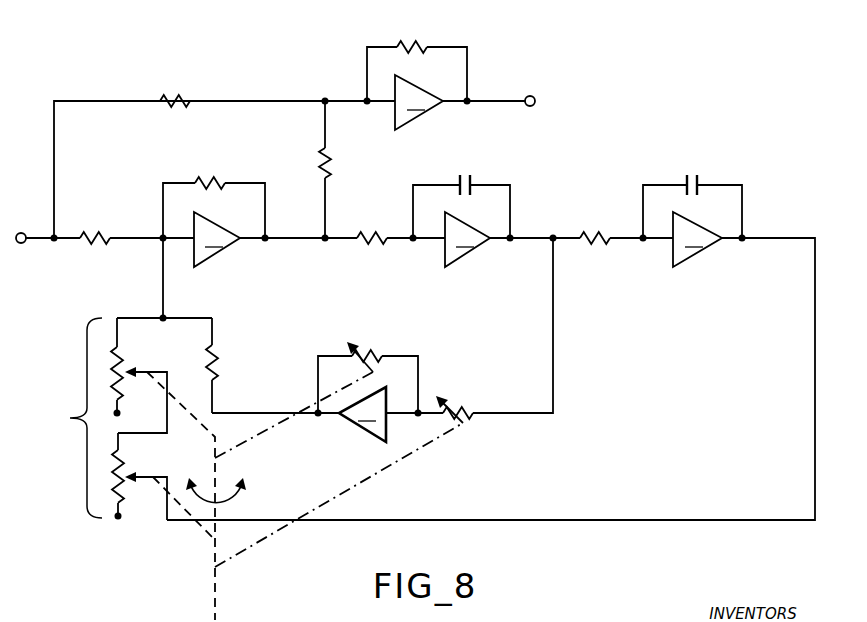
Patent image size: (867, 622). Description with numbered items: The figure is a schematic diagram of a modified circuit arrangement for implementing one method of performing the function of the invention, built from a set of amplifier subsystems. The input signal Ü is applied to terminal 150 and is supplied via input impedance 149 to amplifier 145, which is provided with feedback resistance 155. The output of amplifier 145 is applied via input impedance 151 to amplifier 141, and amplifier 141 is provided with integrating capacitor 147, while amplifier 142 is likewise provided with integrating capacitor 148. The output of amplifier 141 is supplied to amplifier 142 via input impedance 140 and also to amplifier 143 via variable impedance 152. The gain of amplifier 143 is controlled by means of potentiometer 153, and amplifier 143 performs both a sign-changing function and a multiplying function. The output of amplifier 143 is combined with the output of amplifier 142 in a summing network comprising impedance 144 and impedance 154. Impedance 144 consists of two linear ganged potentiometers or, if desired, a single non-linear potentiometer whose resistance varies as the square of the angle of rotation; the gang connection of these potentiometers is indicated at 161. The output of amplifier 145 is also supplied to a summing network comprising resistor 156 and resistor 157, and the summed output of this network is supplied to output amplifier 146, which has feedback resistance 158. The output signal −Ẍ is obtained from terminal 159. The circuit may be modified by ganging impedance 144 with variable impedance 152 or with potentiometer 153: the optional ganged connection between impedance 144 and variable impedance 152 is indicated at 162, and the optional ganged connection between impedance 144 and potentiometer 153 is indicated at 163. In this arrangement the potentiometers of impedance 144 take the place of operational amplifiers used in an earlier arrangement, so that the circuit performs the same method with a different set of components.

The input impedance 140 is at (595, 248).
The amplifier 141 is at (467, 239).
The amplifier 142 is at (697, 239).
The amplifier 143 is at (362, 414).
The impedance 144 is at (70, 420).
The amplifier 145 is at (217, 239).
The output amplifier 146 is at (419, 102).
The integrating capacitor 147 is at (476, 180).
The integrating capacitor 148 is at (700, 179).
The input impedance 149 is at (93, 232).
The terminal 150 is at (24, 245).
The input impedance 151 is at (369, 248).
The variable impedance 152 is at (464, 407).
The potentiometer 153 is at (375, 354).
The impedance 154 is at (218, 352).
The feedback resistance 155 is at (210, 179).
The resistor 156 is at (330, 172).
The resistor 157 is at (173, 97).
The feedback resistance 158 is at (427, 44).
The terminal 159 is at (552, 89).
The gang connection 161 is at (200, 419).
The ganged connection 162 is at (424, 456).
The ganged connection 163 is at (267, 440).